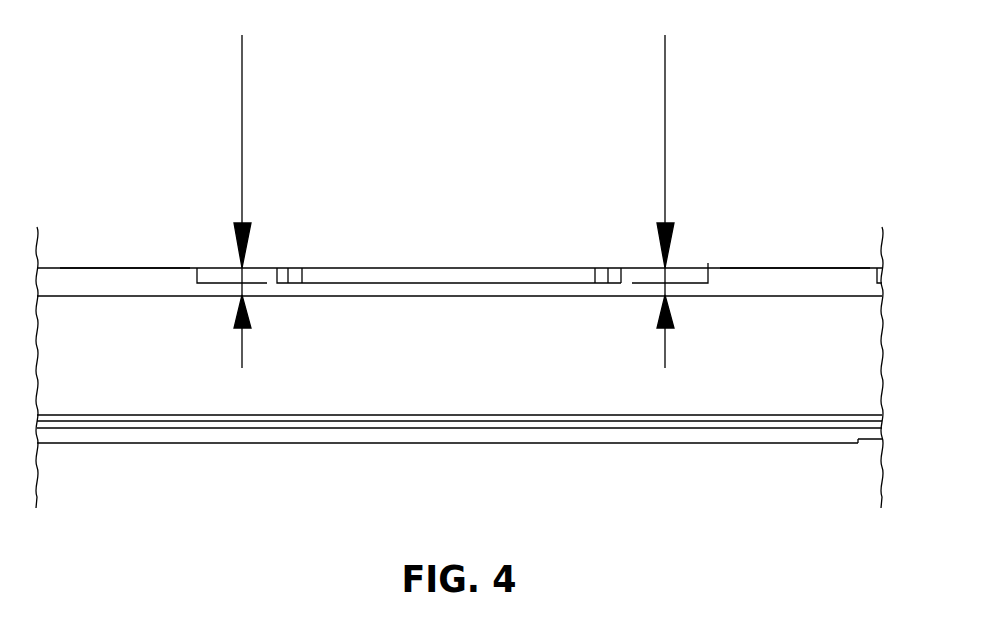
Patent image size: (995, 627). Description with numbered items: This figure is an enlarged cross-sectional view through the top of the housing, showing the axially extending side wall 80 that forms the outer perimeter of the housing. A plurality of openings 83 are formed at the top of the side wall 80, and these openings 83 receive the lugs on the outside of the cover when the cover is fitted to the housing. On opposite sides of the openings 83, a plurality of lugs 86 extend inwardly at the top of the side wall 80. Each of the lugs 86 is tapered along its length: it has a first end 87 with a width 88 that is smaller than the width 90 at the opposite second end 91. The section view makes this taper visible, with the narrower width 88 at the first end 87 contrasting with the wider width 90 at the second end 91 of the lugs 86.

The side wall 80 is at (120, 398).
The openings 83 is at (126, 263).
The lugs 86 is at (431, 275).
The first end 87 is at (628, 267).
The width 88 is at (710, 280).
The width 90 is at (197, 271).
The second end 91 is at (269, 277).